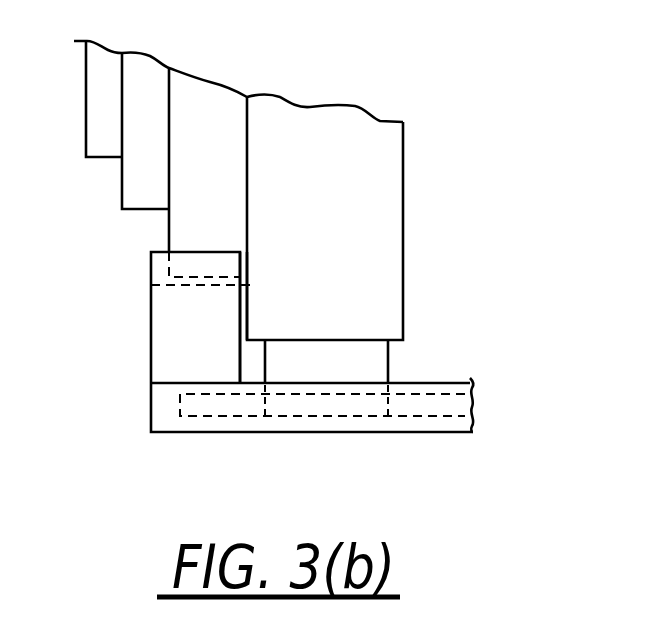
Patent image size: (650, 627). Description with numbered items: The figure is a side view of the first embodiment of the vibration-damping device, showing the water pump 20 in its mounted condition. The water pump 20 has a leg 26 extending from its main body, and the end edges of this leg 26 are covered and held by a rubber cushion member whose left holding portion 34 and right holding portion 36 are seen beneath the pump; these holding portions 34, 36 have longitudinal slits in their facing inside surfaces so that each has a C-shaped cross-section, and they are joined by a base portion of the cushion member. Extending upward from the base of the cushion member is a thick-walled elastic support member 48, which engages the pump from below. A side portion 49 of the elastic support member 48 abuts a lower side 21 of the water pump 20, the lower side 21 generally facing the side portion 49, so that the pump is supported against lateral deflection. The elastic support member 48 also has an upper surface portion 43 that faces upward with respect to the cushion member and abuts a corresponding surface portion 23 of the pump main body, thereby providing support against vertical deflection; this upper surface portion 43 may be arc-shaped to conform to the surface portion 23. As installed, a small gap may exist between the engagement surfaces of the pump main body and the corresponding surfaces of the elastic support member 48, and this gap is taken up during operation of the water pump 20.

The water pump 20 is at (422, 172).
The lower side of the water pump 21 is at (250, 298).
The surface portion of the main body 23 is at (215, 277).
The leg 26 is at (380, 362).
The upper surface portion 43 is at (192, 285).
The elastic support member 48 is at (172, 328).
The side portion 49 is at (240, 327).
The left holding portion 34 is at (423, 432).
The right holding portion 36 is at (423, 432).